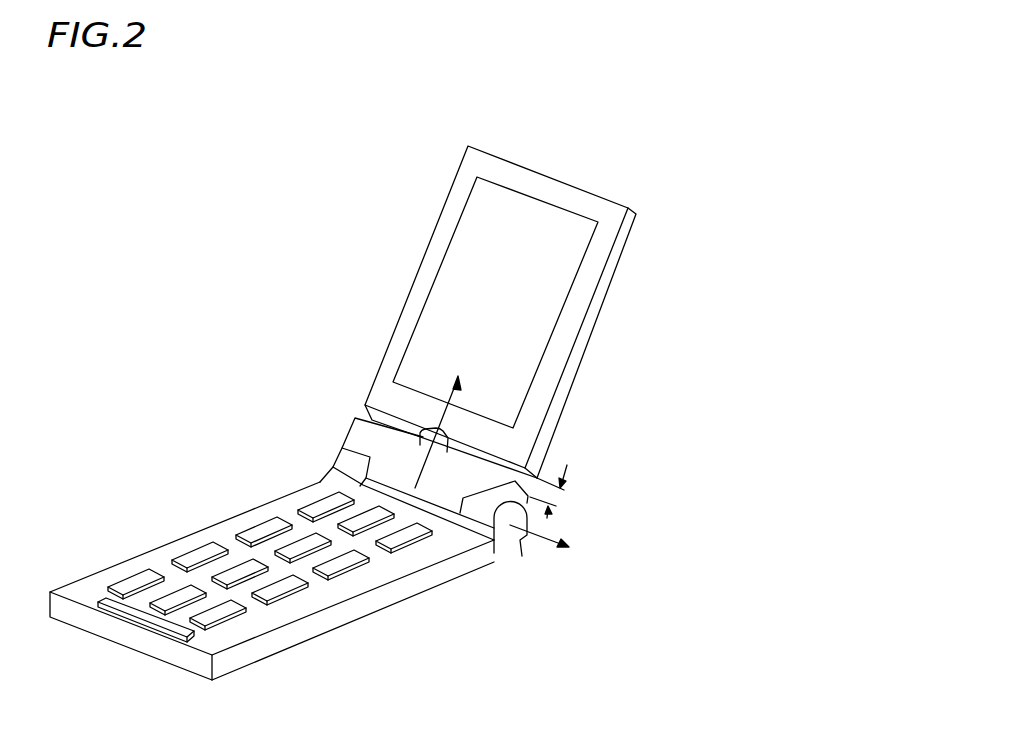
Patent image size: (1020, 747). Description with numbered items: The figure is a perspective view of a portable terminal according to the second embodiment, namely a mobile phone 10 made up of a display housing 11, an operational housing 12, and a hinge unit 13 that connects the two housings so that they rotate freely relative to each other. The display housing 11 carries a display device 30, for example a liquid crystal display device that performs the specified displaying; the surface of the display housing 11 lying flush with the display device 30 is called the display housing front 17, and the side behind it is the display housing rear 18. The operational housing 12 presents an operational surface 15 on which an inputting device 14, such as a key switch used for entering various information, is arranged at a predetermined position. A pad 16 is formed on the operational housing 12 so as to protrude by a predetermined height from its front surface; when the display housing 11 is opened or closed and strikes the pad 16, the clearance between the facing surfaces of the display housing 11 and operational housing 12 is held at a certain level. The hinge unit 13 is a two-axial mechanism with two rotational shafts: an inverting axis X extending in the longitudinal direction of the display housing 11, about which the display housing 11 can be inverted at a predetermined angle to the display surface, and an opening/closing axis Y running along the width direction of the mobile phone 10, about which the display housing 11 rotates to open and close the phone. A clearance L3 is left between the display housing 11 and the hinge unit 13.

The mobile phone 10 is at (327, 160).
The display housing 11 is at (572, 370).
The operational housing 12 is at (433, 578).
The hinge unit 13 is at (528, 552).
The inputting device 14 is at (198, 543).
The operational surface 15 is at (300, 602).
The pad 16 is at (130, 610).
The display housing front 17 is at (580, 295).
The display housing rear 18 is at (628, 243).
The display device 30 is at (523, 230).
The inverting axis X is at (481, 405).
The opening/closing axis Y is at (661, 560).
The clearance L3 is at (634, 488).